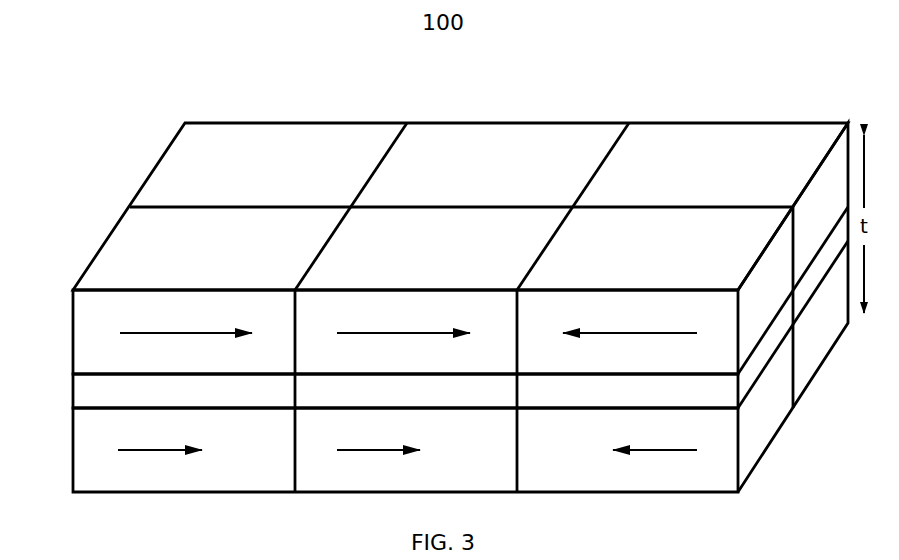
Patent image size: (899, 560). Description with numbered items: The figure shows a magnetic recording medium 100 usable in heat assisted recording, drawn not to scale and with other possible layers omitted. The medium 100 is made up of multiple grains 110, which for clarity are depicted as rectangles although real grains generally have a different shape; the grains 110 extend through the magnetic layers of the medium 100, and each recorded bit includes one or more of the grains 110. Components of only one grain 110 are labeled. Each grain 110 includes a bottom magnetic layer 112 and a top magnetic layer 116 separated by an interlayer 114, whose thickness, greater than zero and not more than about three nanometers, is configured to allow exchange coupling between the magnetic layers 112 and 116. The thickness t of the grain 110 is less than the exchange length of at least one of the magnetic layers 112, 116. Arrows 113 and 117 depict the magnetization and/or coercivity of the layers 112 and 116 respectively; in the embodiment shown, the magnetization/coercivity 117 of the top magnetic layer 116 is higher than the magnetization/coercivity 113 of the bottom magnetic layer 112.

The magnetic recording medium 100 is at (465, 33).
The grain 110 is at (705, 82).
The magnetic layer 112 is at (72, 458).
The arrow 113 is at (147, 452).
The interlayer 114 is at (72, 392).
The magnetic layer 116 is at (72, 342).
The arrow 117 is at (183, 333).